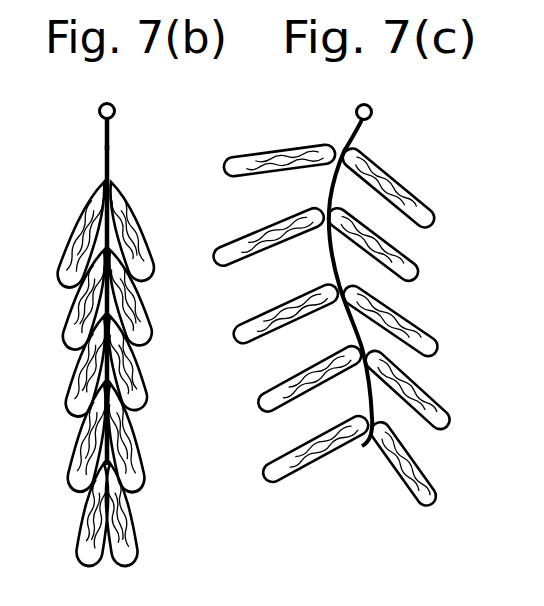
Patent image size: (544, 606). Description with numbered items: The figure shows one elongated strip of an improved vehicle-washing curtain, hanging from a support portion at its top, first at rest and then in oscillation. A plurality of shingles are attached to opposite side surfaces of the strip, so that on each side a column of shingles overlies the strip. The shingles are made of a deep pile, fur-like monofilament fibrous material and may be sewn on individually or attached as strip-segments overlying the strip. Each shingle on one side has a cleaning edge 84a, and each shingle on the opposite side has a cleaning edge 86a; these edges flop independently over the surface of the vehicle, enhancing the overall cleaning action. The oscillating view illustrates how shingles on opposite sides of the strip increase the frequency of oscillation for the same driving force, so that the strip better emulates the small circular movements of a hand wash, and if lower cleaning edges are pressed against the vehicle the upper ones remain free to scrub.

The cleaning edge 84a is at (430, 227).
The cleaning edge 86a is at (227, 173).